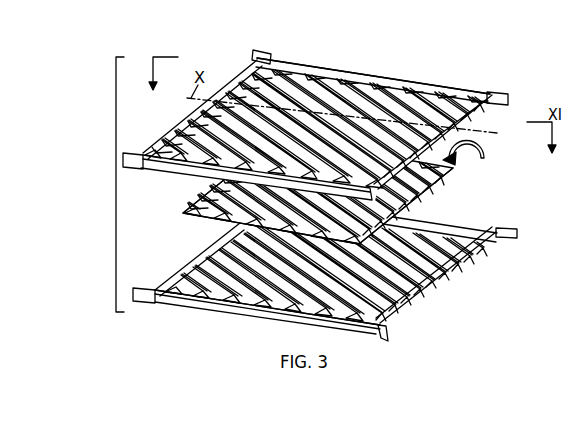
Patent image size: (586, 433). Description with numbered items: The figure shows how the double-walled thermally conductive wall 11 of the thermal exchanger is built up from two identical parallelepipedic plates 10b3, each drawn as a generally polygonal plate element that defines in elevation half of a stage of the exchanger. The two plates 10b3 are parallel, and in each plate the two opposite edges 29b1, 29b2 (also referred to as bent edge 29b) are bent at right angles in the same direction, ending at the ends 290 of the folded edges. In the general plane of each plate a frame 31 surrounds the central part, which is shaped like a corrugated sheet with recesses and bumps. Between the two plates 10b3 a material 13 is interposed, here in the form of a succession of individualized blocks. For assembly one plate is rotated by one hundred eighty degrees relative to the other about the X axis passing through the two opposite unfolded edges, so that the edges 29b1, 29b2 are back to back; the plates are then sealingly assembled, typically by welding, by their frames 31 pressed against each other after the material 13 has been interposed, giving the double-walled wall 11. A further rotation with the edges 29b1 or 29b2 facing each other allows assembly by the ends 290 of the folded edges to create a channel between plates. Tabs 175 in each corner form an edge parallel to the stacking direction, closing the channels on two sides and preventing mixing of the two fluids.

The thermally conductive wall 11 is at (116, 186).
The material 13 is at (412, 198).
The tabs 175 is at (142, 303).
The ends of the folded edges 290 is at (202, 298).
The bent edge 29b is at (175, 160).
The first bent edge 29b1 is at (245, 305).
The second bent edge 29b2 is at (498, 240).
The parallelepipedic plate 10b3 is at (478, 249).
The frame 31 is at (446, 310).